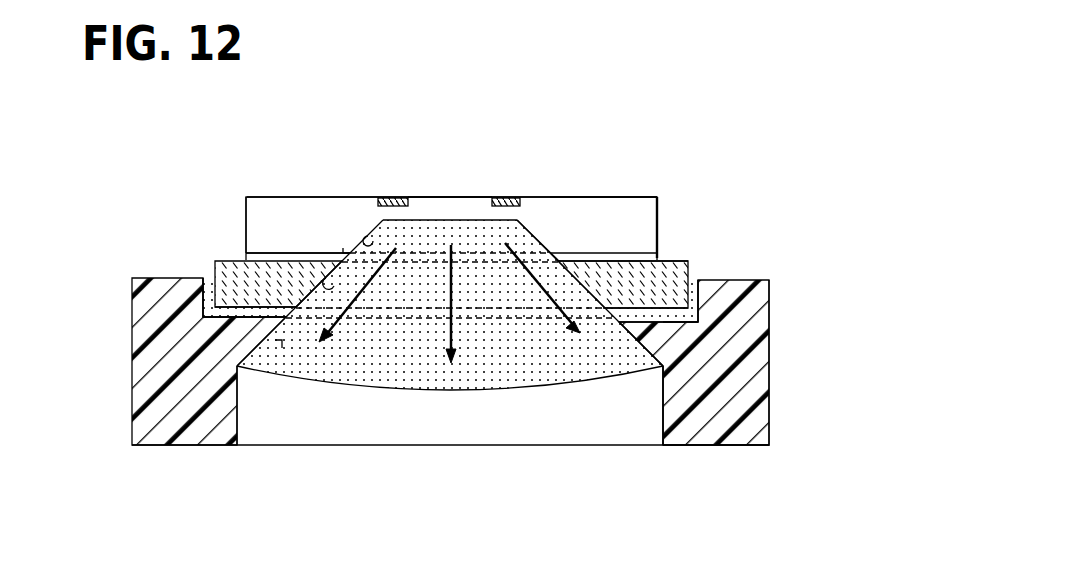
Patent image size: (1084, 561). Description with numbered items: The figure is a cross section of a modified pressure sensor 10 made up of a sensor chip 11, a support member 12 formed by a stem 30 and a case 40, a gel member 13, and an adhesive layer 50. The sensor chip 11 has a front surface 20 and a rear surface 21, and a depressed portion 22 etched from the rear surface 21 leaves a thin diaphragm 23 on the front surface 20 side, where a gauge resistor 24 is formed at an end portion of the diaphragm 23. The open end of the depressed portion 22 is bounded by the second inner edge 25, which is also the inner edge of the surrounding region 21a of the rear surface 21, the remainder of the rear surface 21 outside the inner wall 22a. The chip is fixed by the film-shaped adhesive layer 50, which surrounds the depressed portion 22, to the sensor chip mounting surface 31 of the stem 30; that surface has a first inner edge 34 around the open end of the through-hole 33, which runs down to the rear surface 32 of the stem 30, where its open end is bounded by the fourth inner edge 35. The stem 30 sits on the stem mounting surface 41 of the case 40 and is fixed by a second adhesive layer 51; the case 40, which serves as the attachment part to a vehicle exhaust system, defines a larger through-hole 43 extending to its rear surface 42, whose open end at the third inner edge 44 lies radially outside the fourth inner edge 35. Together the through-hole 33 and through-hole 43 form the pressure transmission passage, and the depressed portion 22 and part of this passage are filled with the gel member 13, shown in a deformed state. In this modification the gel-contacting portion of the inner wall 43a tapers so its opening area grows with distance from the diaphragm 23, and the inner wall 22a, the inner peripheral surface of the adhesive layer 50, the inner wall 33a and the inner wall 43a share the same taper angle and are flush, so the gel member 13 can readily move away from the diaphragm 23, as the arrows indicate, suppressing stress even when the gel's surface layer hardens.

The pressure sensor 10 is at (808, 139).
The sensor chip 11 is at (657, 212).
The support member 12 is at (827, 237).
The gel member 13 is at (410, 392).
The front surface 20 is at (617, 197).
The rear surface 21 is at (642, 253).
The surrounding region 21a is at (275, 258).
The depressed portion 22 is at (423, 232).
The inner wall of the depressed portion 22a is at (534, 231).
The diaphragm 23 is at (460, 210).
The gauge resistor 24 is at (388, 197).
The second inner edge 25 is at (360, 248).
The stem 30 is at (698, 273).
The sensor chip mounting surface 31 is at (666, 261).
The rear surface of the stem 32 is at (233, 305).
The through-hole of the stem 33 is at (478, 293).
The inner wall of the through-hole of the stem 33a is at (568, 262).
The first inner edge 34 is at (346, 258).
The fourth inner edge 35 is at (312, 308).
The case 40 is at (769, 297).
The stem mounting surface 41 is at (673, 322).
The rear surface of the case 42 is at (720, 445).
The through-hole of the case 43 is at (365, 417).
The inner wall of the through-hole of the case 43a is at (643, 352).
The third inner edge 44 is at (607, 323).
The adhesive layer 50 is at (255, 258).
The adhesive layer 51 is at (210, 290).